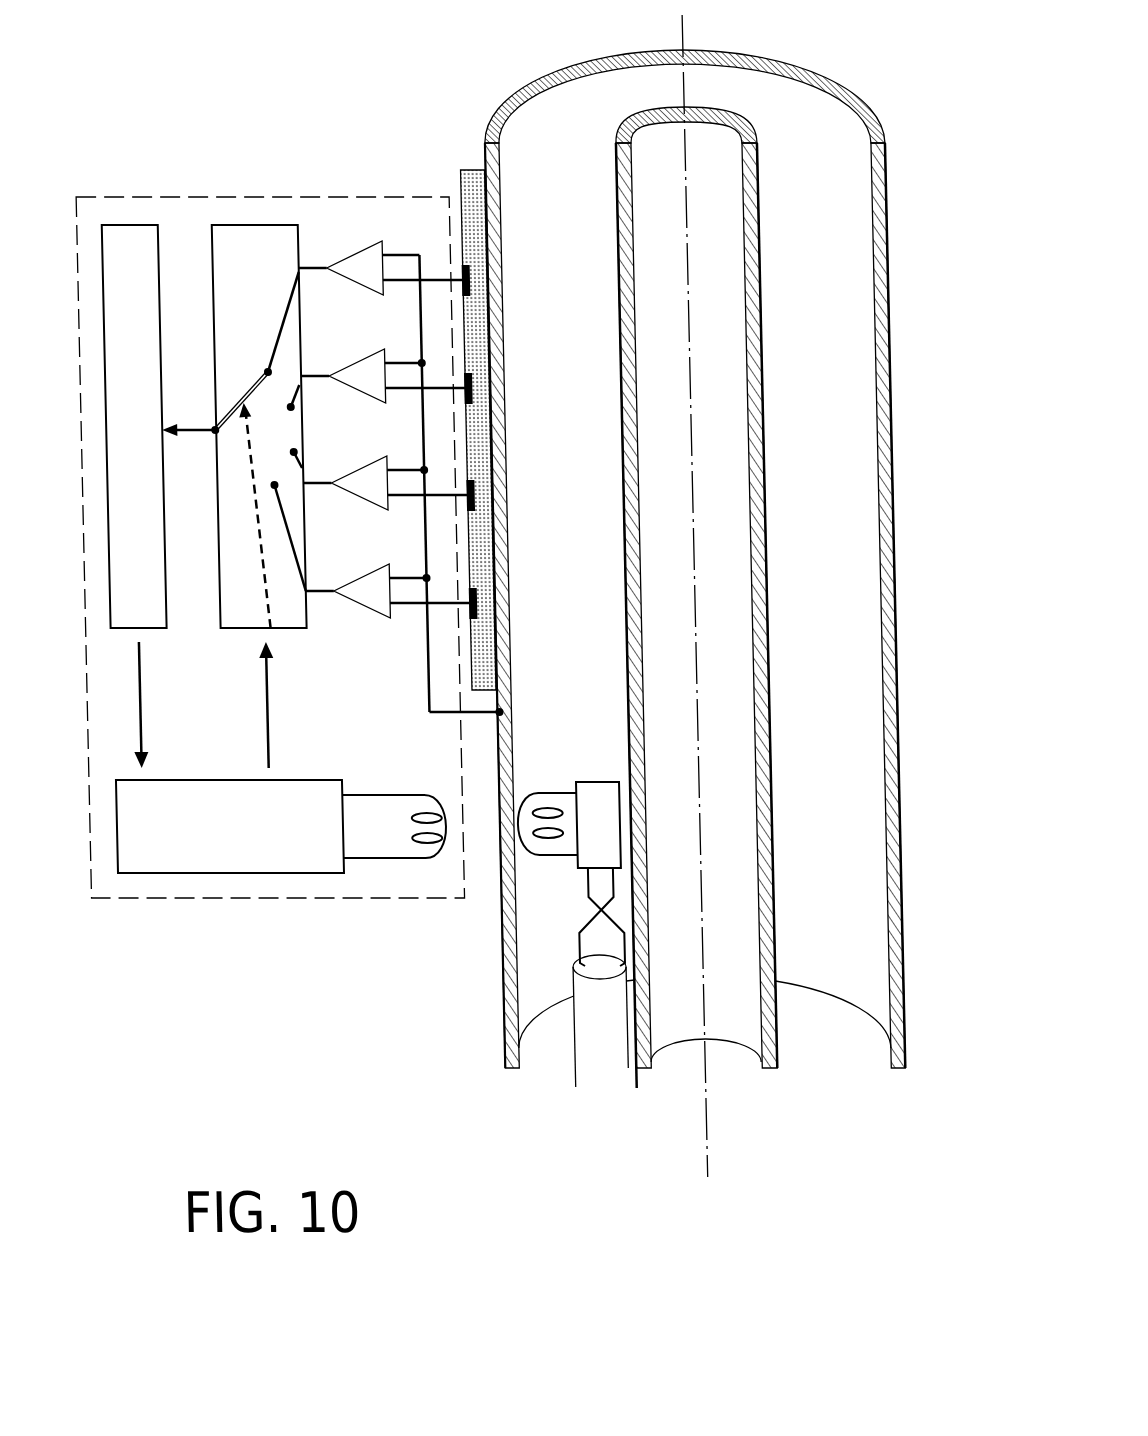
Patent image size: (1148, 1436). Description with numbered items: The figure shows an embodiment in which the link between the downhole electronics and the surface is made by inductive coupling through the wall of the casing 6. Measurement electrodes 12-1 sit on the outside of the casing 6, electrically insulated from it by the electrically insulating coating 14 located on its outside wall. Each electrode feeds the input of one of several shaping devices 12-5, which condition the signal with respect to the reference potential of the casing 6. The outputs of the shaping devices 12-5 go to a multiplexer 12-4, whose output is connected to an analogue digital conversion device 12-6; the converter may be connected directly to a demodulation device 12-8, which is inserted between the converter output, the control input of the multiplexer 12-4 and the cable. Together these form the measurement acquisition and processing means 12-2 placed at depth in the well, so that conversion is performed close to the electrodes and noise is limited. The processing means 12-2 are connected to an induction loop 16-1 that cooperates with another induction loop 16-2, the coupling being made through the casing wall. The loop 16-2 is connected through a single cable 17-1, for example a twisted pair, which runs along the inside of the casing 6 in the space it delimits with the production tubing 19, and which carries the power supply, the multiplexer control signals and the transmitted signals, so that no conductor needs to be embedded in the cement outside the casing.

The casing 6 is at (863, 92).
The production tubing 19 is at (644, 118).
The electrically insulating coating 14 is at (470, 167).
The measurement electrodes 12-1 is at (463, 617).
The measurement acquisition and processing means 12-2 is at (164, 195).
The multiplexer 12-4 is at (256, 242).
The shaping devices 12-5 is at (354, 262).
The analogue digital conversion device 12-6 is at (158, 620).
The demodulation device 12-8 is at (204, 863).
The induction loop 16-1 is at (412, 858).
The induction loop 16-2 is at (541, 790).
The cable 17-1 is at (565, 1060).